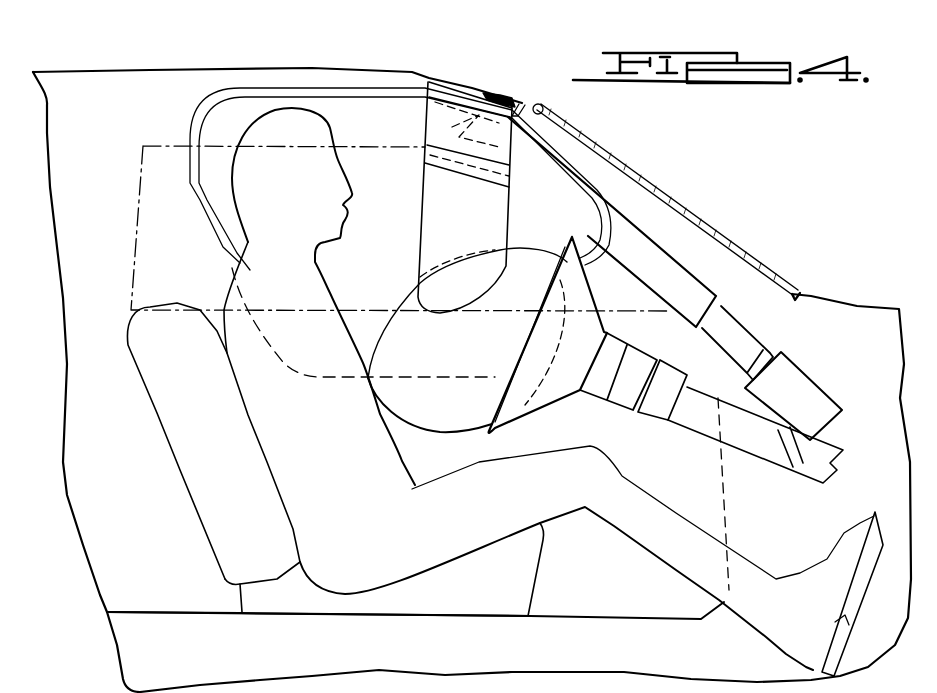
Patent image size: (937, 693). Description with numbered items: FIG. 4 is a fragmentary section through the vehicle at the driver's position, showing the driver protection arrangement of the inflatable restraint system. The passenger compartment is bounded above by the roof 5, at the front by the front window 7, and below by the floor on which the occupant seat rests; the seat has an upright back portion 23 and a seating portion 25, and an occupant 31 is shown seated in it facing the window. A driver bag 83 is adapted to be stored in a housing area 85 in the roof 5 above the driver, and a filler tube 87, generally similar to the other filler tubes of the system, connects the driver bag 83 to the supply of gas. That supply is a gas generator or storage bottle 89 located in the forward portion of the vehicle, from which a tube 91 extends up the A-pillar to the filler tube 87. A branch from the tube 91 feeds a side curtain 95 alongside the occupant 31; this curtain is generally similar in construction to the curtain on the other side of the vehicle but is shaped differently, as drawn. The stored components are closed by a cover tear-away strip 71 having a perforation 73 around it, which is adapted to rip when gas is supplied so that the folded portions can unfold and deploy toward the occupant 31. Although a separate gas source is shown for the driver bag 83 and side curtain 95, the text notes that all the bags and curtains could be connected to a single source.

The roof 5 is at (490, 86).
The front window 7 is at (652, 186).
The upright back portion 23 is at (173, 430).
The seating portion 25 is at (437, 597).
The occupant 31 is at (287, 475).
The cover tear-away strip 71 is at (470, 173).
The perforation 73 is at (452, 164).
The driver bag 83 is at (446, 406).
The housing area 85 is at (421, 81).
The filler tube 87 is at (420, 238).
The gas generator or storage bottle 89 is at (798, 375).
The tube 91 is at (672, 260).
The side curtain 95 is at (218, 210).